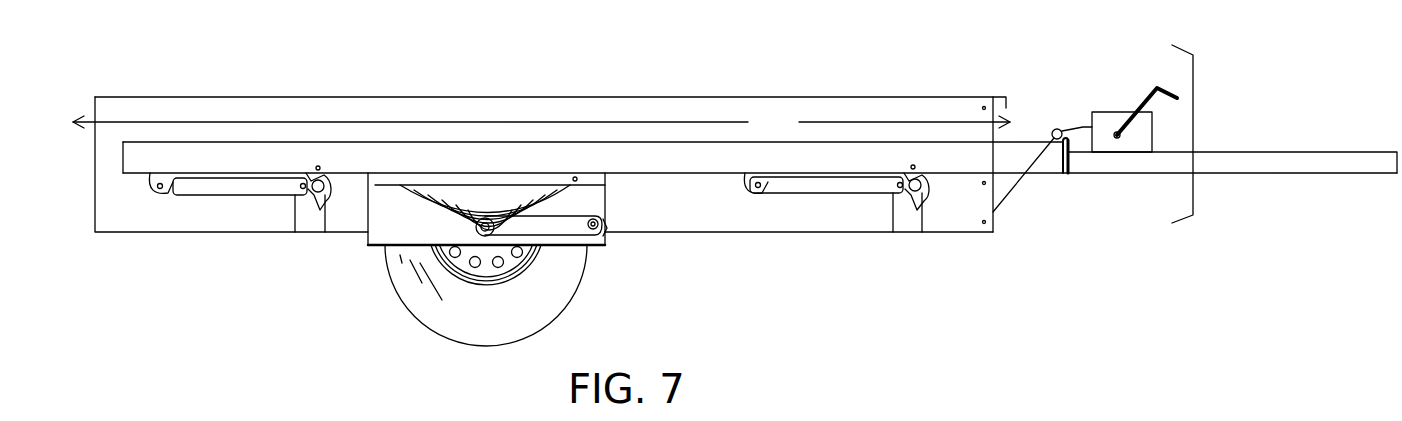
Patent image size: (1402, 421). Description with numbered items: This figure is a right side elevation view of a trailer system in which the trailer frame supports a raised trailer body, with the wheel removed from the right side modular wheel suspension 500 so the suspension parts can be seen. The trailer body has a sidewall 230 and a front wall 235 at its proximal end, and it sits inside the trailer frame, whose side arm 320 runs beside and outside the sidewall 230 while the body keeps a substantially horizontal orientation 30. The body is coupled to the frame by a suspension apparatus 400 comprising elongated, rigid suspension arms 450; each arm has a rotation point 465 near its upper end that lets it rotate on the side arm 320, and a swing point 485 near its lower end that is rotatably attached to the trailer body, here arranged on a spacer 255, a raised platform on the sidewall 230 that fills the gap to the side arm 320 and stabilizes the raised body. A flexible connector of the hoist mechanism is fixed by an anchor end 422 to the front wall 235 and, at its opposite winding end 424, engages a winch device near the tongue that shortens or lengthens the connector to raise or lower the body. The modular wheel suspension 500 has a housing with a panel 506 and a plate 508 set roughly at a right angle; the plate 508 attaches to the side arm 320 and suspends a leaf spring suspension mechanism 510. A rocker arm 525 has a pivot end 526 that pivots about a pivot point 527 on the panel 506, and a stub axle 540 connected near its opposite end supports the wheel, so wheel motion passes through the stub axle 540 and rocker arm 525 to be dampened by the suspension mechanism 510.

The substantially horizontal orientation 30 is at (541, 123).
The sidewall 230 is at (683, 128).
The front wall 235 is at (993, 232).
The spacer 255 is at (910, 223).
The side arm 320 is at (515, 152).
The suspension apparatus 400 is at (1193, 138).
The anchor end 422 is at (993, 212).
The winding end 424 is at (1083, 125).
The suspension arm 450 is at (230, 187).
The rotation point 465 is at (160, 184).
The swing point 485 is at (302, 184).
The modular wheel suspension 500 is at (378, 253).
The panel 506 is at (402, 218).
The plate 508 is at (415, 179).
The suspension mechanism 510 is at (498, 207).
The rocker arm 525 is at (535, 228).
The pivot end 526 is at (607, 228).
The pivot point 527 is at (593, 229).
The stub axle 540 is at (485, 227).